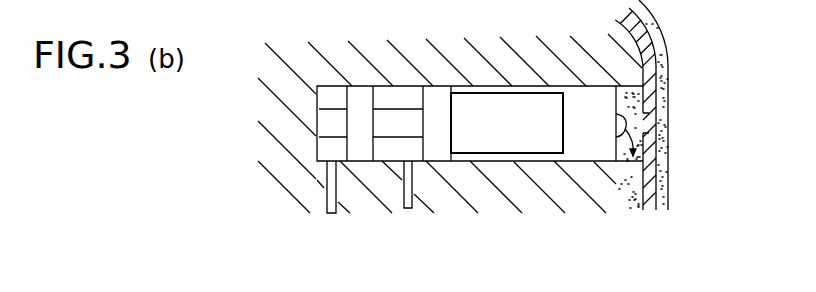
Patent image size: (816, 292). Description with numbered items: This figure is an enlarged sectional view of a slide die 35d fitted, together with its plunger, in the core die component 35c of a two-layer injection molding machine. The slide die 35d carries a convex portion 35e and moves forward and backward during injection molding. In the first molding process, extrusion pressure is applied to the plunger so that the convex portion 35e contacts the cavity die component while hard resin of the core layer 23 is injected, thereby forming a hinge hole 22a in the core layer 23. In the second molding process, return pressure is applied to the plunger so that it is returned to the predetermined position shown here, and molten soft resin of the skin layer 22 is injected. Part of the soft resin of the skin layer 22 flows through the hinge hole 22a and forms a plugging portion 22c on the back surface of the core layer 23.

The core layer 23 is at (662, 46).
The skin layer 22 is at (663, 73).
The hinge hole 22a is at (650, 127).
The plugging portion 22c is at (621, 163).
The core die component 35c is at (502, 190).
The slide die 35d is at (573, 164).
The convex portion 35e is at (625, 163).